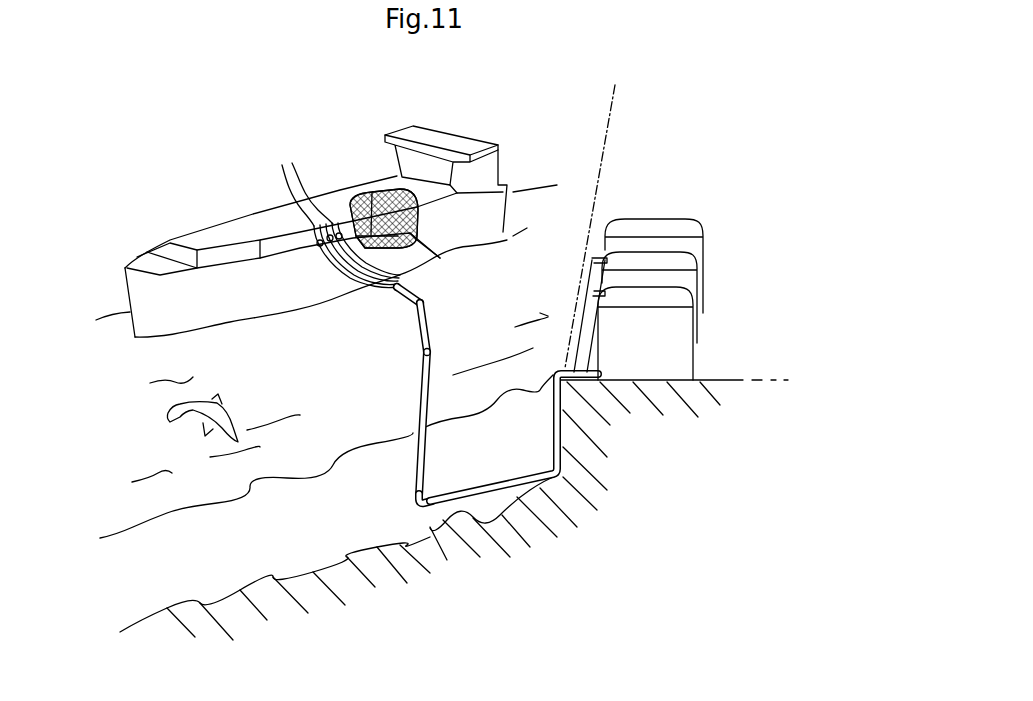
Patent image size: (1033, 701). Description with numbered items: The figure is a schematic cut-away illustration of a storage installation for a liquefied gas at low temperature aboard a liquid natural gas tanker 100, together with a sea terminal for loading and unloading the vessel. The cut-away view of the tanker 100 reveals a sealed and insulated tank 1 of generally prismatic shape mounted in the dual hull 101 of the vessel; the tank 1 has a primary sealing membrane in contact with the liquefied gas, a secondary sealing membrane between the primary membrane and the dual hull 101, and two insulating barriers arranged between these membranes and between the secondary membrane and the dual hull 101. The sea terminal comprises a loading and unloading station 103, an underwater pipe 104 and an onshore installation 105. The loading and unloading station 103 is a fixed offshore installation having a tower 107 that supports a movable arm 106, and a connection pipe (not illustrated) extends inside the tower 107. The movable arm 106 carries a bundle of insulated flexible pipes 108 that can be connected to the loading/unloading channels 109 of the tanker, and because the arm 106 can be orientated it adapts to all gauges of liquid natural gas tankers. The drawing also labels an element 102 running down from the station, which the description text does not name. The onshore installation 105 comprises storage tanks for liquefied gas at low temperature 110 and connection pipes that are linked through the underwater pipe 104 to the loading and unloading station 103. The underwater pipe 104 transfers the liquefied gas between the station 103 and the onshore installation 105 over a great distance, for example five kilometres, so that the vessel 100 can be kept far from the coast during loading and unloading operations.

The liquid natural gas tanker 100 is at (481, 133).
The sealed and insulated tank 1 is at (371, 196).
The bundle of insulated flexible pipes 108 is at (321, 220).
The dual hull 101 is at (421, 258).
The tower 107 is at (382, 304).
The onshore installation 105 is at (433, 322).
The vertical pipeline 102 is at (412, 410).
The movable arm 106 is at (412, 470).
The loading and unloading station 103 is at (486, 481).
The storage tanks for liquefied gas at low temperature 110 is at (580, 317).
The underwater pipe 104 is at (667, 209).
The loading/unloading channels 109 is at (632, 217).